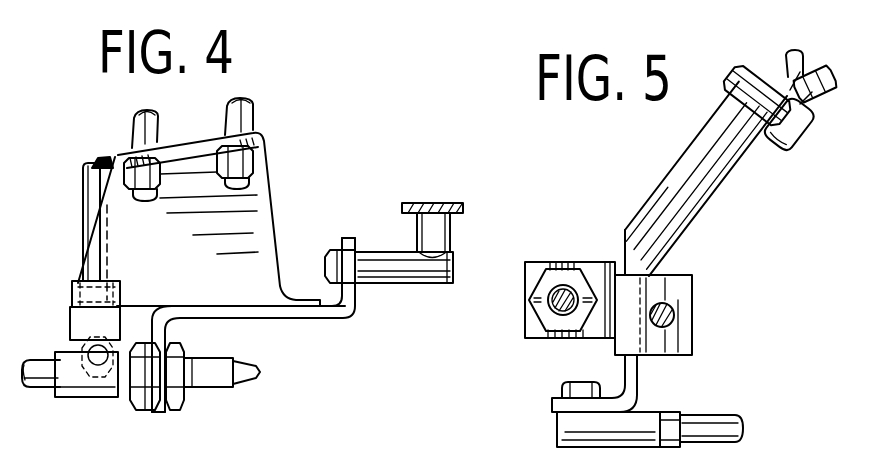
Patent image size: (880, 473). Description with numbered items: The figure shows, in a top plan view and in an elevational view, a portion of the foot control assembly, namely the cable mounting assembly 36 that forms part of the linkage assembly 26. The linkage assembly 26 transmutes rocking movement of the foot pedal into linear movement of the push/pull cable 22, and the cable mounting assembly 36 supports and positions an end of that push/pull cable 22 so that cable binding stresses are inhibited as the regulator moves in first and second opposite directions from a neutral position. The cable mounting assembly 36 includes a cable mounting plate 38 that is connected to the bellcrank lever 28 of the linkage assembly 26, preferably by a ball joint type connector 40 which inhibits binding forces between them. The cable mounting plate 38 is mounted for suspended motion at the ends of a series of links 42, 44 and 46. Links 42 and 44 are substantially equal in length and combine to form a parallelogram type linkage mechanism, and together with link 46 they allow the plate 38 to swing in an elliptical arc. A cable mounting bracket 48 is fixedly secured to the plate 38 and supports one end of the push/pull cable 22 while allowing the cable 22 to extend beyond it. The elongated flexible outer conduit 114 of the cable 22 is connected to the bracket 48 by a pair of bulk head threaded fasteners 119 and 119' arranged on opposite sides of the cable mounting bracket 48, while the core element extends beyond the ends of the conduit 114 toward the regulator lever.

In FIG. 4, the push/pull cable 22 is at (35, 358).
In FIG. 5, the push/pull cable 22 is at (548, 338).
In FIG. 4, the linkage assembly 26 is at (413, 203).
In FIG. 4, the bellcrank lever 28 is at (432, 207).
In FIG. 4, the cable mounting assembly 36 is at (270, 186).
In FIG. 5, the cable mounting assembly 36 is at (668, 203).
In FIG. 4, the cable mounting plate 38 is at (276, 252).
In FIG. 5, the cable mounting plate 38 is at (700, 175).
In FIG. 4, the ball joint type connector 40 is at (430, 266).
In FIG. 4, the link 42 is at (154, 138).
In FIG. 5, the link 42 is at (795, 65).
In FIG. 4, the link 44 is at (246, 127).
In FIG. 5, the link 44 is at (820, 107).
In FIG. 4, the link 46 is at (90, 185).
In FIG. 5, the link 46 is at (642, 420).
In FIG. 4, the cable mounting bracket 48 is at (305, 308).
In FIG. 5, the cable mounting bracket 48 is at (541, 266).
In FIG. 4, the outer conduit 114 is at (44, 380).
In FIG. 4, the bulk head threaded fastener 119 is at (130, 396).
In FIG. 4, the bulk head threaded fastener 119' is at (213, 396).
In FIG. 5, the bulk head threaded fastener 119' is at (525, 300).